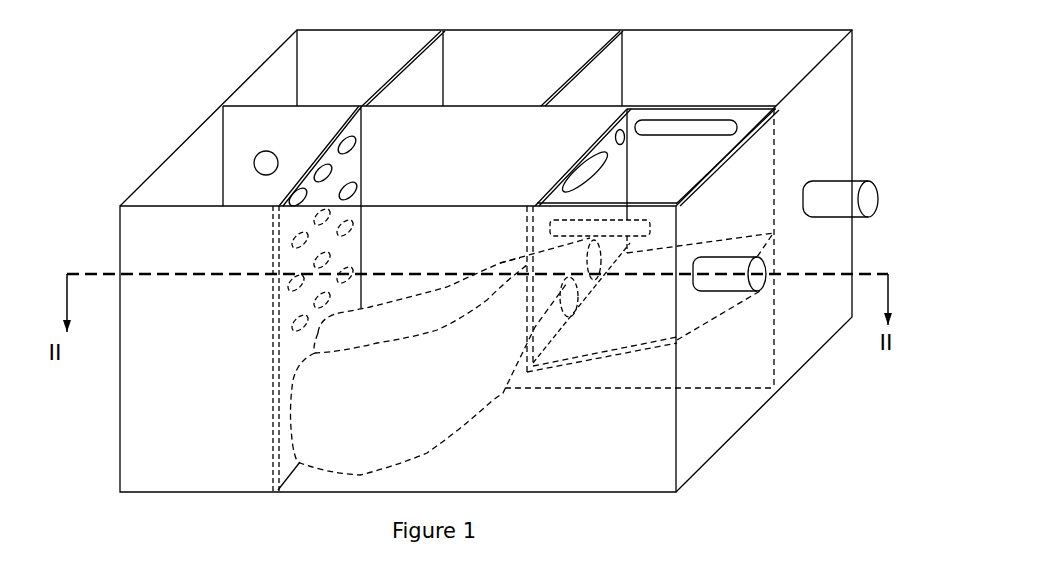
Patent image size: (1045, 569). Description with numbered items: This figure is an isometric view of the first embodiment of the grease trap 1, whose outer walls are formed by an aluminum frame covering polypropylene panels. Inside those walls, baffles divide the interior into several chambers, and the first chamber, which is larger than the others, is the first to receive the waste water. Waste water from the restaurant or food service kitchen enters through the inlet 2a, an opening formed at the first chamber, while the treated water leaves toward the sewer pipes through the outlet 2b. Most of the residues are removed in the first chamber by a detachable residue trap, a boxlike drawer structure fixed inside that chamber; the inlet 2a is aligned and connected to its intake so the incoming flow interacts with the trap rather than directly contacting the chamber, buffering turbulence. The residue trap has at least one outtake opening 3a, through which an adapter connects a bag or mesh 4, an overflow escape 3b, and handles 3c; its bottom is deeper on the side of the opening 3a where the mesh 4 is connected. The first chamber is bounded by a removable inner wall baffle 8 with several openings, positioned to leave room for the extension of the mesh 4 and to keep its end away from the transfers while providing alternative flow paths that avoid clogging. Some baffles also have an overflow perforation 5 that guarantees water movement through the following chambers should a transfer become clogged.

The grease trap 1 is at (170, 90).
The inlet 2a is at (765, 277).
The outlet 2b is at (868, 193).
The outtake opening 3a is at (567, 302).
The overflow escape 3b is at (578, 165).
The handles 3c is at (697, 123).
The mesh 4 is at (315, 336).
The overflow perforation 5 is at (252, 160).
The inner wall baffle 8 is at (274, 225).